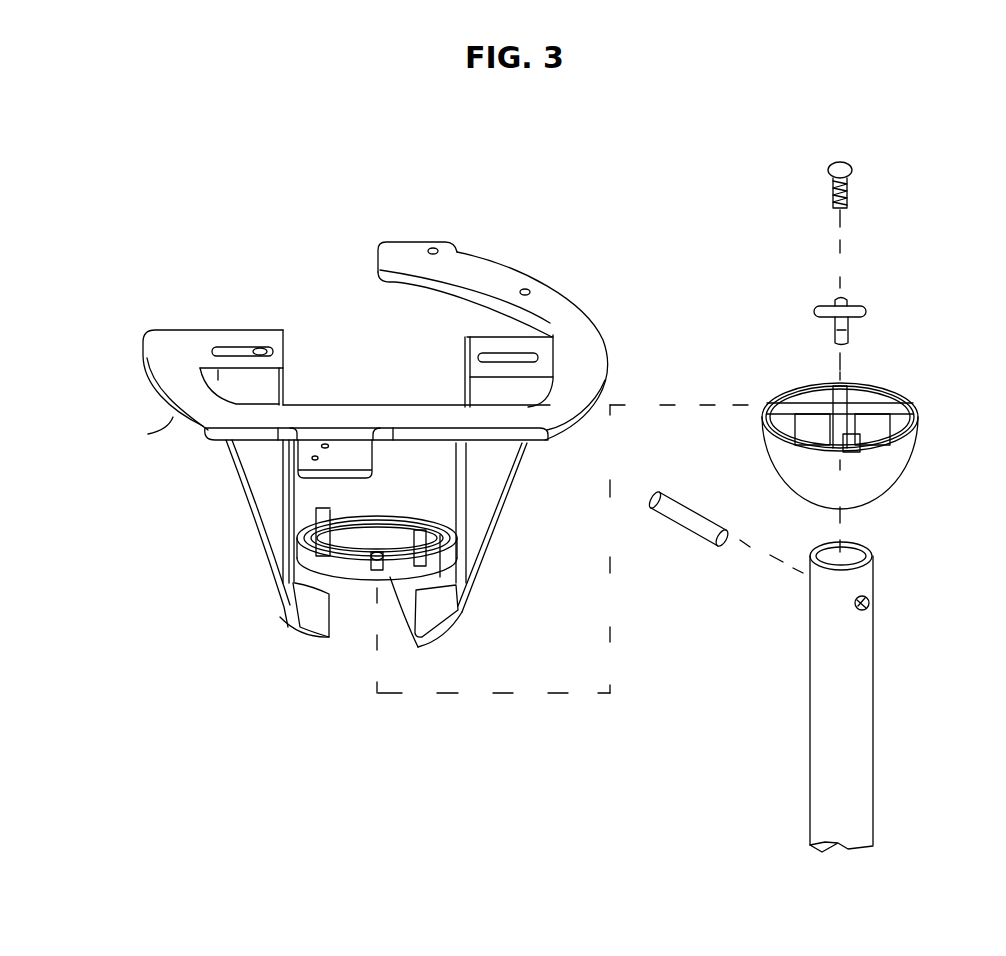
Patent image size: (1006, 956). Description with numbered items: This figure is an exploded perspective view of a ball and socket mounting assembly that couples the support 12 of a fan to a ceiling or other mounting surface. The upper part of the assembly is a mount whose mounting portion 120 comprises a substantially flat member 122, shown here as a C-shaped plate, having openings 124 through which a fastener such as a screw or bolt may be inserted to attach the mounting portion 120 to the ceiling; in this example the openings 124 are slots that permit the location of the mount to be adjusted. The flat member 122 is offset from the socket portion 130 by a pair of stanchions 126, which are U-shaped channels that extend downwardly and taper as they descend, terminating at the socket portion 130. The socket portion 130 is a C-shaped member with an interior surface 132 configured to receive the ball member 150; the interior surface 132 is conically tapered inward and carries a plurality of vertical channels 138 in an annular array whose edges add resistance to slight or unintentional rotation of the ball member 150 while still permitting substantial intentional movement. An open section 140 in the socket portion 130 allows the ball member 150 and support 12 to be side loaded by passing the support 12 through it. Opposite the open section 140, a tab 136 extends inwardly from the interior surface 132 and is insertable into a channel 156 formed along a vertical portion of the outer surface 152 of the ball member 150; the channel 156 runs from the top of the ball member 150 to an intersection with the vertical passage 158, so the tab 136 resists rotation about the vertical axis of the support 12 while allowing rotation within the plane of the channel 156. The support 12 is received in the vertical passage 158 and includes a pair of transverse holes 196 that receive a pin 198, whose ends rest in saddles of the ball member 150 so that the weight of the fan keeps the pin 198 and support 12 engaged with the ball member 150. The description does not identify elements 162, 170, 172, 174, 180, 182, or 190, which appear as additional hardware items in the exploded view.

The support 12 is at (869, 697).
The mounting portion 120 is at (352, 452).
The flat member 122 is at (168, 426).
The openings 124 is at (257, 348).
The stanchions 126 is at (257, 517).
The socket portion 130 is at (274, 627).
The interior surface 132 is at (378, 536).
The tab 136 is at (418, 647).
The vertical channels 138 is at (325, 503).
The open section 140 is at (364, 654).
The ball member 150 is at (840, 439).
The outer surface 152 is at (817, 473).
The channel 156 is at (853, 380).
The vertical passage 158 is at (877, 408).
The boss 162 is at (856, 455).
The fastener assembly 170 is at (833, 316).
The pin 172 is at (866, 337).
The shank 174 is at (848, 341).
The head 180 is at (862, 312).
The bore 182 is at (846, 297).
The screw 190 is at (853, 171).
The transverse holes 196 is at (868, 610).
The pin 198 is at (672, 527).